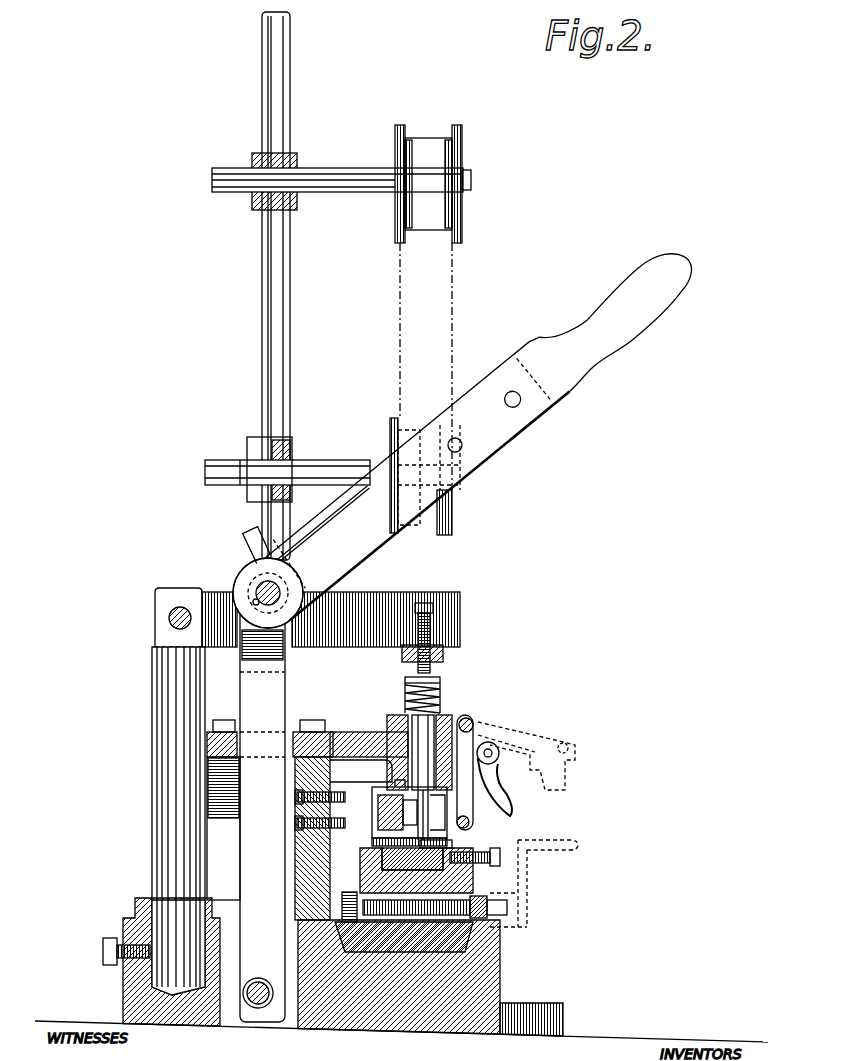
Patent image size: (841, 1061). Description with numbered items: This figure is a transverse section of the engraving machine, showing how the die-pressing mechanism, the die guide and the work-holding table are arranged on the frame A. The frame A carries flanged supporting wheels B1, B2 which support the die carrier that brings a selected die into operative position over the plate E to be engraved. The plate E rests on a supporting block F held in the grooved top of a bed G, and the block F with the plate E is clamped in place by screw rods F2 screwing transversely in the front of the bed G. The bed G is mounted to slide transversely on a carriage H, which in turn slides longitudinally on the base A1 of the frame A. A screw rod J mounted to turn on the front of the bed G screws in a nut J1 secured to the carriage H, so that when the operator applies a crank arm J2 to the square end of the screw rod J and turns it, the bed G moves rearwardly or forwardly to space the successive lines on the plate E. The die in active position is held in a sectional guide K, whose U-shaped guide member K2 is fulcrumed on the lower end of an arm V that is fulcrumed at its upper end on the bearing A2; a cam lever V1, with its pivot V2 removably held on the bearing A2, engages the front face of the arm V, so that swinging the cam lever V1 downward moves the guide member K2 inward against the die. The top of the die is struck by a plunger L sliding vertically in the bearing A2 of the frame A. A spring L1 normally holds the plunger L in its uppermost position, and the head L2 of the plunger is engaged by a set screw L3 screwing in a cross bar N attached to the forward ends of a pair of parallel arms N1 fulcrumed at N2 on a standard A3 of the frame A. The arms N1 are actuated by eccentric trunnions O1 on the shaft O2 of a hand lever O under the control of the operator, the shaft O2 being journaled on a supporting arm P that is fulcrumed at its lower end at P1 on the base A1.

The frame A is at (247, 286).
The base A1 is at (403, 1020).
The bearing A2 is at (395, 726).
The standard A3 is at (168, 765).
The flanged supporting wheel B1 is at (462, 152).
The flanged supporting wheel B2 is at (392, 430).
The hand lever O is at (513, 437).
The eccentric trunnion O1 is at (273, 601).
The shaft O2 is at (256, 586).
The cross bar N is at (403, 656).
The parallel arm N1 is at (376, 600).
The fulcrum N2 is at (168, 618).
The supporting arm P is at (277, 697).
The fulcrum P1 is at (258, 1008).
The plunger L is at (440, 720).
The spring L1 is at (405, 700).
The head L2 is at (443, 683).
The set screw L3 is at (435, 623).
The arm V is at (462, 776).
The cam lever V1 is at (510, 800).
The pivot V2 is at (483, 745).
The sectional guide K is at (380, 787).
The guide member K2 is at (447, 815).
The plate E is at (452, 845).
The supporting block F is at (382, 855).
The screw rod F2 is at (490, 855).
The bed G is at (475, 877).
The carriage H is at (452, 940).
The screw rod J is at (507, 908).
The nut J1 is at (360, 890).
The crank arm J2 is at (527, 893).